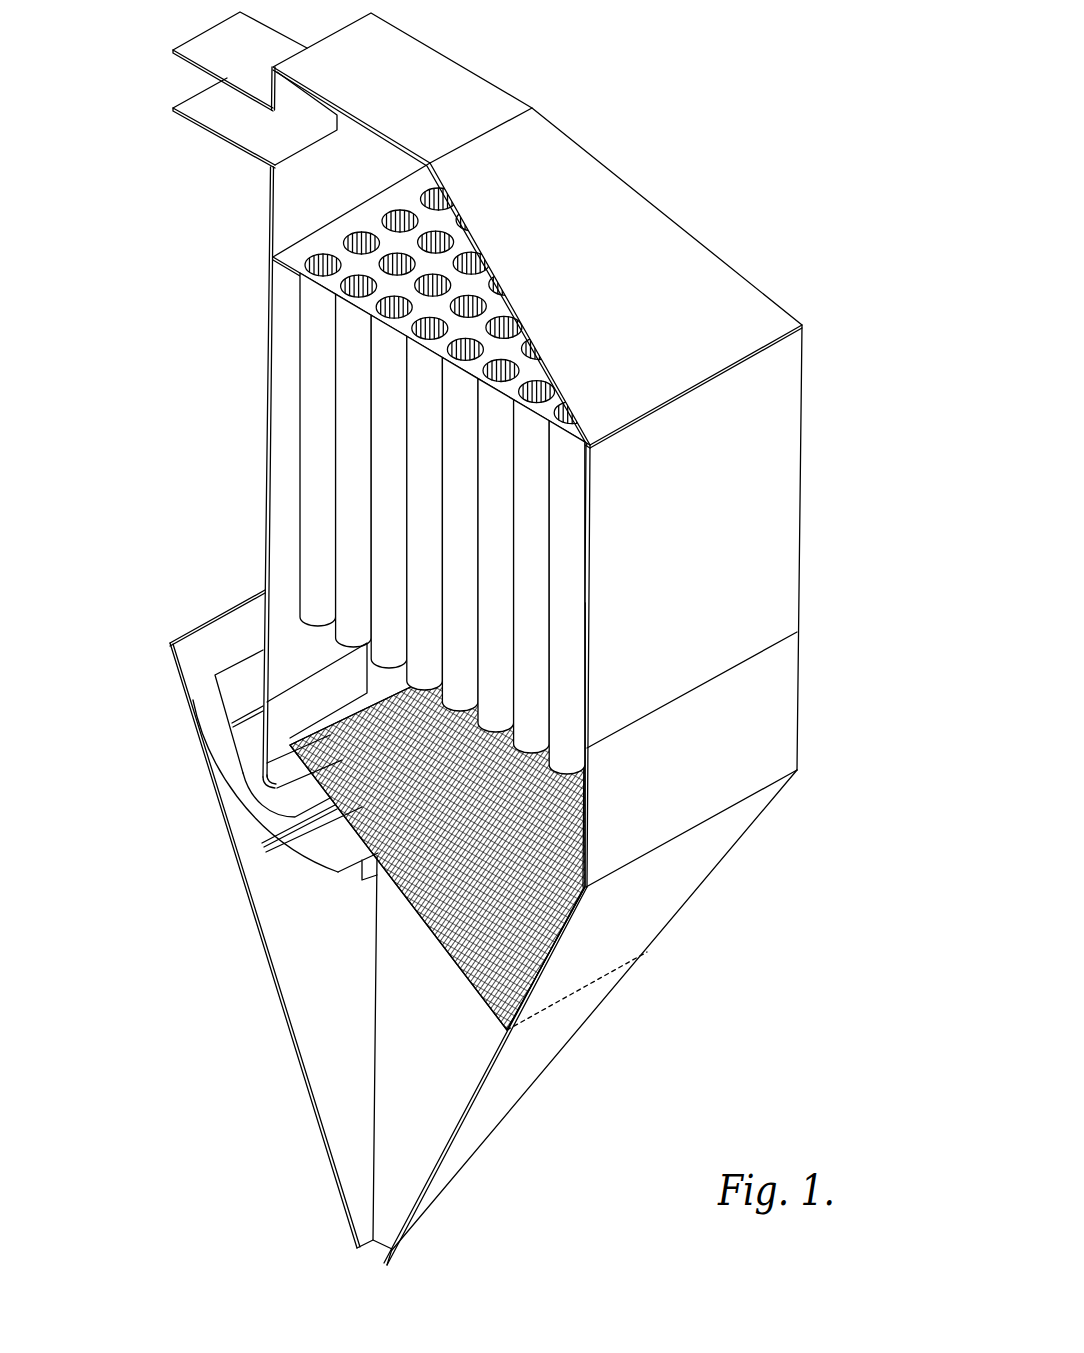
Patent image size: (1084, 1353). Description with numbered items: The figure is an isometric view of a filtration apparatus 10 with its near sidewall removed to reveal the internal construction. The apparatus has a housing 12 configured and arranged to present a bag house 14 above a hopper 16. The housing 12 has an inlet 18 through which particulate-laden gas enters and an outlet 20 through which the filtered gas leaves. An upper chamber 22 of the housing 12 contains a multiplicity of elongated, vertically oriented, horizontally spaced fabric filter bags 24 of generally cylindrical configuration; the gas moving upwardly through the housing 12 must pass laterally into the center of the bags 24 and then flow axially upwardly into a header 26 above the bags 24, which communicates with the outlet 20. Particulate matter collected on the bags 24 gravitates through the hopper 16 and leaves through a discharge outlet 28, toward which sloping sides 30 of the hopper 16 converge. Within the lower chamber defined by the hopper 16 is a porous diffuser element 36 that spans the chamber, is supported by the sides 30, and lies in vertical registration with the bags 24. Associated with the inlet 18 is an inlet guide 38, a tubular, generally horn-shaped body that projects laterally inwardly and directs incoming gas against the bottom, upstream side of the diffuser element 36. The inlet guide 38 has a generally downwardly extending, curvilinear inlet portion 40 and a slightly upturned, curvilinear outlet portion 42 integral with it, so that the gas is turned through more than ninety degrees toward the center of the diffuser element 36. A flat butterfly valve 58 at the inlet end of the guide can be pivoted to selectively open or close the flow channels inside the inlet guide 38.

The filtration apparatus 10 is at (632, 150).
The housing 12 is at (788, 412).
The bag house 14 is at (812, 492).
The hopper 16 is at (311, 1117).
The inlet 18 is at (187, 634).
The outlet 20 is at (203, 46).
The upper chamber 22 is at (283, 456).
The fabric filter bags 24 is at (318, 378).
The header 26 is at (290, 199).
The discharge outlet 28 is at (377, 1247).
The sloping sides 30 is at (463, 1072).
The porous diffuser element 36 is at (420, 950).
The inlet guide 38 is at (254, 852).
The inlet portion 40 is at (229, 816).
The outlet portion 42 is at (306, 870).
The butterfly valve 58 is at (244, 670).